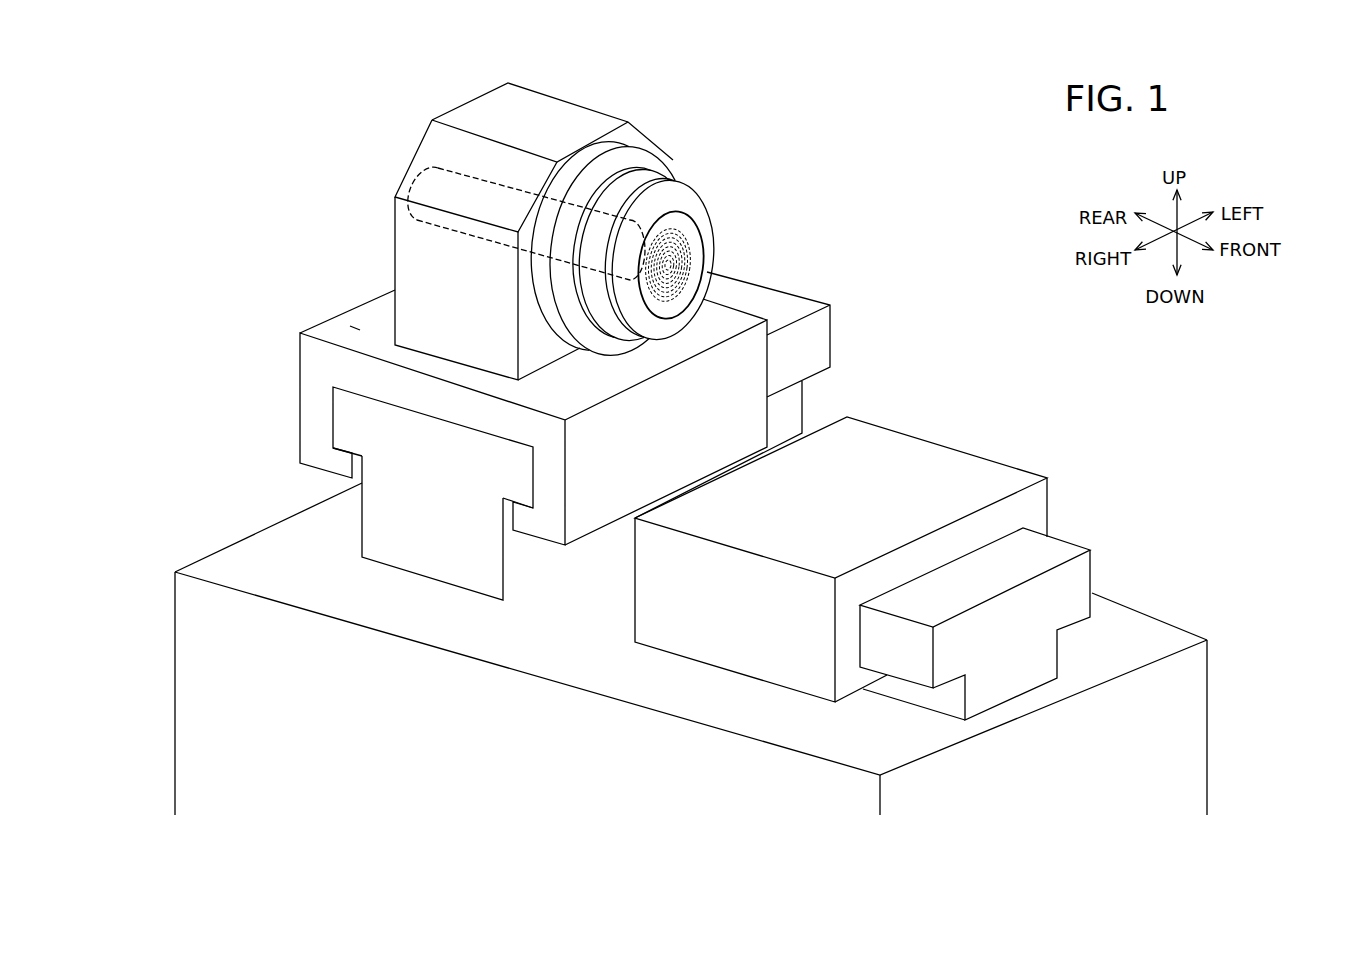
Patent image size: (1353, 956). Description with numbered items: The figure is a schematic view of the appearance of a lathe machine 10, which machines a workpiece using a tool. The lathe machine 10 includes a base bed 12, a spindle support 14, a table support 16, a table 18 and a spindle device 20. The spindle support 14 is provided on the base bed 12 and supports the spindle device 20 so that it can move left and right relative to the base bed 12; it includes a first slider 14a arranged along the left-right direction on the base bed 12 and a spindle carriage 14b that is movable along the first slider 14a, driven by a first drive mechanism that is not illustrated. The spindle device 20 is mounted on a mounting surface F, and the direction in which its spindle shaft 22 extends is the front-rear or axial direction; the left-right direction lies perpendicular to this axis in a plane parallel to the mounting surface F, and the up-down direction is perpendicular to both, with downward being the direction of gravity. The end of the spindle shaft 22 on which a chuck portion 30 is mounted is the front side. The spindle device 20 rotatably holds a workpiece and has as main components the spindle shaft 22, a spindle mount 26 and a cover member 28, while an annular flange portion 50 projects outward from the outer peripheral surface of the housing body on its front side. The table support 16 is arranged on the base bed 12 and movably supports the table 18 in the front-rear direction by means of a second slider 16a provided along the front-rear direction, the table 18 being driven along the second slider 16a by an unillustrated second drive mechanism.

The lathe machine 10 is at (236, 176).
The base bed 12 is at (176, 660).
The spindle support 14 is at (253, 414).
The first slider 14a is at (438, 542).
The spindle carriage 14b is at (318, 358).
The mounting surface F is at (355, 328).
The table support 16 is at (1128, 528).
The second slider 16a is at (1080, 582).
The table 18 is at (692, 635).
The spindle device 20 is at (673, 146).
The spindle shaft 22 is at (468, 172).
The spindle mount 26 is at (416, 245).
The cover member 28 is at (632, 185).
The chuck portion 30 is at (698, 245).
The annular flange portion 50 is at (583, 163).